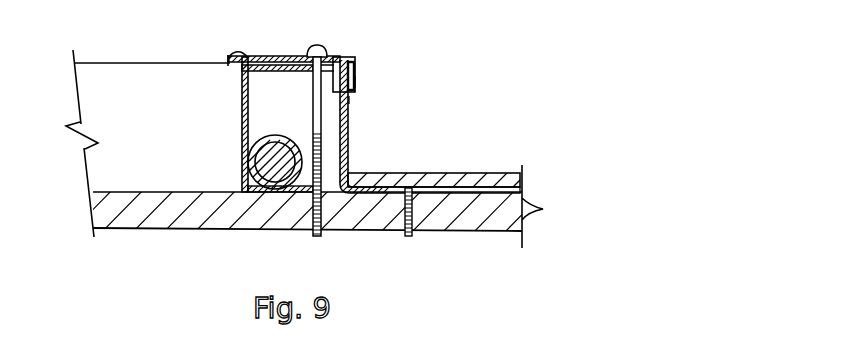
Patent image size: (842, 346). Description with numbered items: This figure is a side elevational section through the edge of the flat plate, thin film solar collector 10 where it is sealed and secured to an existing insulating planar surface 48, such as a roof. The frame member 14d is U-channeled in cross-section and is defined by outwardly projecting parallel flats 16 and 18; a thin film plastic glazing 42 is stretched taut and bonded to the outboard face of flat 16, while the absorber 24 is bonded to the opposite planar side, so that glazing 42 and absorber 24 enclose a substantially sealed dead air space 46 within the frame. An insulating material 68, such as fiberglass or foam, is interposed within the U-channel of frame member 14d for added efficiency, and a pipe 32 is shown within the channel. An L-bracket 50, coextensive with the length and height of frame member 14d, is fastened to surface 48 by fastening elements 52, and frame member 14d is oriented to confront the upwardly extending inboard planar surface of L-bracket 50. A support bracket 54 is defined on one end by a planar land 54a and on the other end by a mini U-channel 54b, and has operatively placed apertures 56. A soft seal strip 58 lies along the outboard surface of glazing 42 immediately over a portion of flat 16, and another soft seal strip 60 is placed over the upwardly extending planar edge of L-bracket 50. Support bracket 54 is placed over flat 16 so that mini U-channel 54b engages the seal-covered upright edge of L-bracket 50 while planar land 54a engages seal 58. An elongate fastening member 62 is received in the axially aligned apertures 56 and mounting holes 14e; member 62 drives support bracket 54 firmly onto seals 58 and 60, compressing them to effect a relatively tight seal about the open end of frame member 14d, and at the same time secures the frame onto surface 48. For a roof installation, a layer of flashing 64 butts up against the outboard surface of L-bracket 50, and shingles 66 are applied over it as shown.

The flat plate, thin film solar collector 10 is at (122, 94).
The frame member 14d is at (242, 108).
The mounting holes 14e is at (356, 112).
The flat 16 is at (250, 76).
The flat 18 is at (282, 218).
The absorber 24 is at (148, 191).
The conduit tube 32 is at (256, 134).
The thin film plastic glazing 42 is at (152, 62).
The dead air space 46 is at (138, 130).
The insulating planar surface 48 is at (153, 218).
The L-bracket 50 is at (349, 98).
The fastening elements 52 is at (413, 187).
The support bracket 54 is at (282, 54).
The planar land 54a is at (242, 54).
The mini U-channel 54b is at (355, 81).
The apertures 56 is at (329, 54).
The soft seal strip 58 is at (354, 68).
The soft seal strip 60 is at (230, 62).
The elongate fastening member 62 is at (315, 47).
The flashing 64 is at (356, 172).
The shingles 66 is at (493, 175).
The insulating material 68 is at (266, 118).